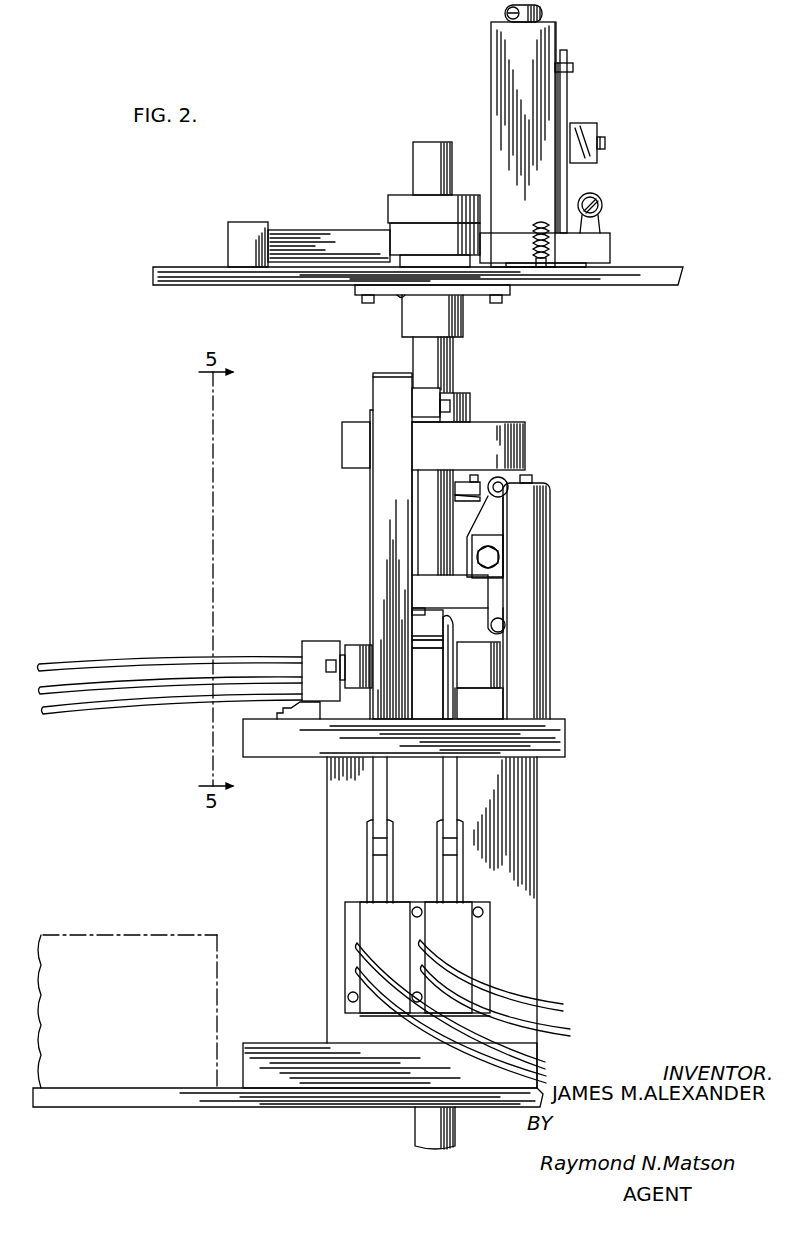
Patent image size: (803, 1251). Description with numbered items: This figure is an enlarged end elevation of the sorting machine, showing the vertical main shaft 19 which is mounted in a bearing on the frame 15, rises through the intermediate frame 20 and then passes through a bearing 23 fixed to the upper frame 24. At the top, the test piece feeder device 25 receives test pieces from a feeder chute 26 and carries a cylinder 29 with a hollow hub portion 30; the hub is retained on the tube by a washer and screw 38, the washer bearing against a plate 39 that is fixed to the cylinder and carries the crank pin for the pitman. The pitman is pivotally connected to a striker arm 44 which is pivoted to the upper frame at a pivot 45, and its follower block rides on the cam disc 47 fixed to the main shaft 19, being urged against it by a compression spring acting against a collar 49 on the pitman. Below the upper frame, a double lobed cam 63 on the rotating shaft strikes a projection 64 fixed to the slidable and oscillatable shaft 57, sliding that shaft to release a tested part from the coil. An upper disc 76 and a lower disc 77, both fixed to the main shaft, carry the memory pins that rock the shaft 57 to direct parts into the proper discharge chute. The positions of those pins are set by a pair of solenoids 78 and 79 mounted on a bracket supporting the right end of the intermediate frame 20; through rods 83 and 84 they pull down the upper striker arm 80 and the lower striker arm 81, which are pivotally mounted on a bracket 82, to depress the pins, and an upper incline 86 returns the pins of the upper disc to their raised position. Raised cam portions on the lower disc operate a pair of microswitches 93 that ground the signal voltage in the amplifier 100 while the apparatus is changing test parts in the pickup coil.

The frame 15 is at (222, 1108).
The main shaft 19 is at (413, 176).
The intermediate frame 20 is at (566, 739).
The bearing 23 is at (463, 316).
The upper frame 24 is at (657, 283).
The test piece feeder device 25 is at (491, 70).
The feeder chute 26 is at (545, 15).
The cylinder 29 is at (556, 123).
The hollow hub portion 30 is at (582, 128).
The screw 38 is at (605, 143).
The plate 39 is at (568, 84).
The striker arm 44 is at (329, 246).
The pivot 45 is at (248, 244).
The cam disc 47 is at (435, 245).
The collar 49 is at (603, 205).
The shaft 57 is at (506, 626).
The double lobed cam 63 is at (450, 595).
The projection 64 is at (503, 594).
The upper disc 76 is at (433, 446).
The lower disc 77 is at (479, 680).
The solenoid 78 is at (385, 957).
The solenoid 79 is at (448, 957).
The upper striker arm 80 is at (432, 390).
The lower striker arm 81 is at (432, 622).
The bracket 82 is at (383, 504).
The rod 83 is at (383, 783).
The rod 84 is at (457, 783).
The upper incline 86 is at (455, 487).
The microswitches 93 is at (302, 645).
The amplifier 100 is at (127, 1011).